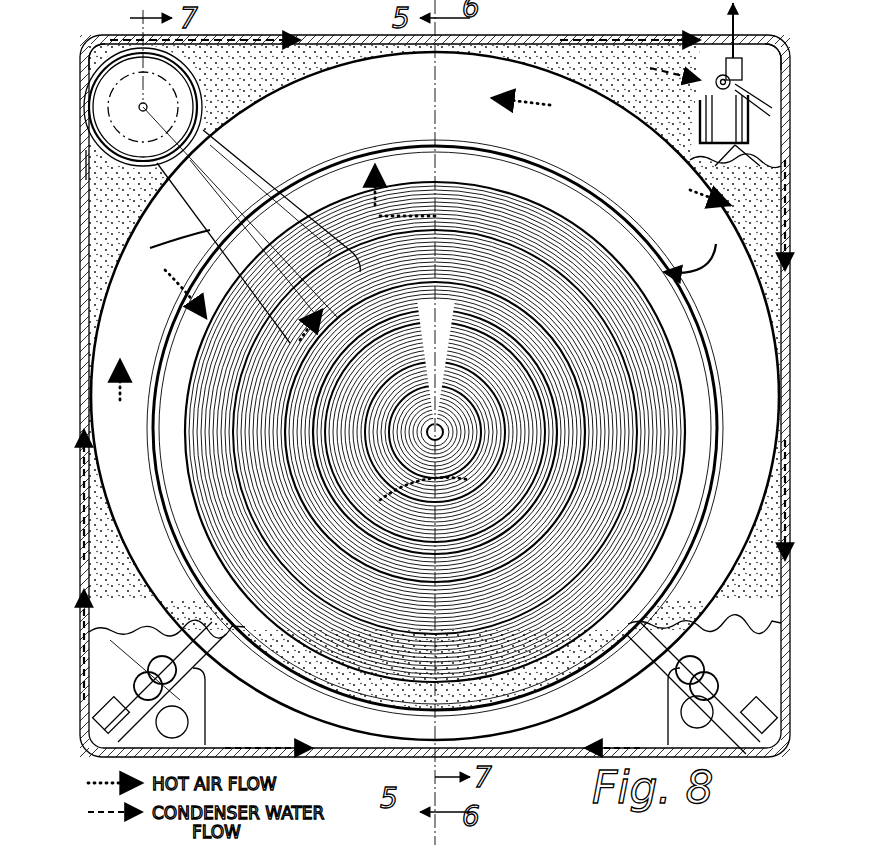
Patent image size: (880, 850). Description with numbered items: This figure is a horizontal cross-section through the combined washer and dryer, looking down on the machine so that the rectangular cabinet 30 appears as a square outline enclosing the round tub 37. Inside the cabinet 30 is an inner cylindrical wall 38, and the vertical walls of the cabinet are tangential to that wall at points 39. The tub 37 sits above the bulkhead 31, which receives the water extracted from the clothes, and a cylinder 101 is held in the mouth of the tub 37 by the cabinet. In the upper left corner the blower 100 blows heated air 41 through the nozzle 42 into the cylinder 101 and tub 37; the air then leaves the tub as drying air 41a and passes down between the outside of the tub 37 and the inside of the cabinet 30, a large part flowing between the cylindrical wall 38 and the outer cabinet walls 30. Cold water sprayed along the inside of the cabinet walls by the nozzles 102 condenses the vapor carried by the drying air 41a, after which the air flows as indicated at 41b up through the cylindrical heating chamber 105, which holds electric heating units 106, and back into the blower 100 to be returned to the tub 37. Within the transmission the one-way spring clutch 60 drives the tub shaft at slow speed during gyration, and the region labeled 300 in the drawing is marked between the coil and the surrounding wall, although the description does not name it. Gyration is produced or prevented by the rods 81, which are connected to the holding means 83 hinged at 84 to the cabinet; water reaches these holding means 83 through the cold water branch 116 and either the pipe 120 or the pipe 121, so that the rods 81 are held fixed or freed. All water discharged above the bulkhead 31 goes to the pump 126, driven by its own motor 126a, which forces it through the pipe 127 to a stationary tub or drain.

The cabinet 30 is at (790, 720).
The bulkhead 31 is at (122, 642).
The tub 37 is at (545, 683).
The inner cylindrical wall 38 is at (318, 724).
The tangential points 39 is at (100, 395).
The heated air 41 is at (296, 245).
The drying air 41a is at (733, 186).
The drying air flow arrows 41b is at (200, 229).
The nozzle 42 is at (240, 256).
The one-way spring clutch 60 is at (478, 405).
The rods 81 is at (192, 638).
The holding means 83 is at (148, 668).
The hinge 84 is at (104, 706).
The blower 100 is at (180, 170).
The cylinder 101 is at (530, 258).
The nozzles 102 is at (88, 48).
The cylindrical heating chamber 105 is at (92, 160).
The electric heating units 106 is at (204, 72).
The branch 116 is at (753, 90).
The pipe 120 is at (188, 732).
The pipe 121 is at (668, 728).
The pump 126 is at (738, 78).
The motor 126a is at (750, 142).
The pipe 127 is at (730, 22).
The annular air passage 300 is at (455, 432).